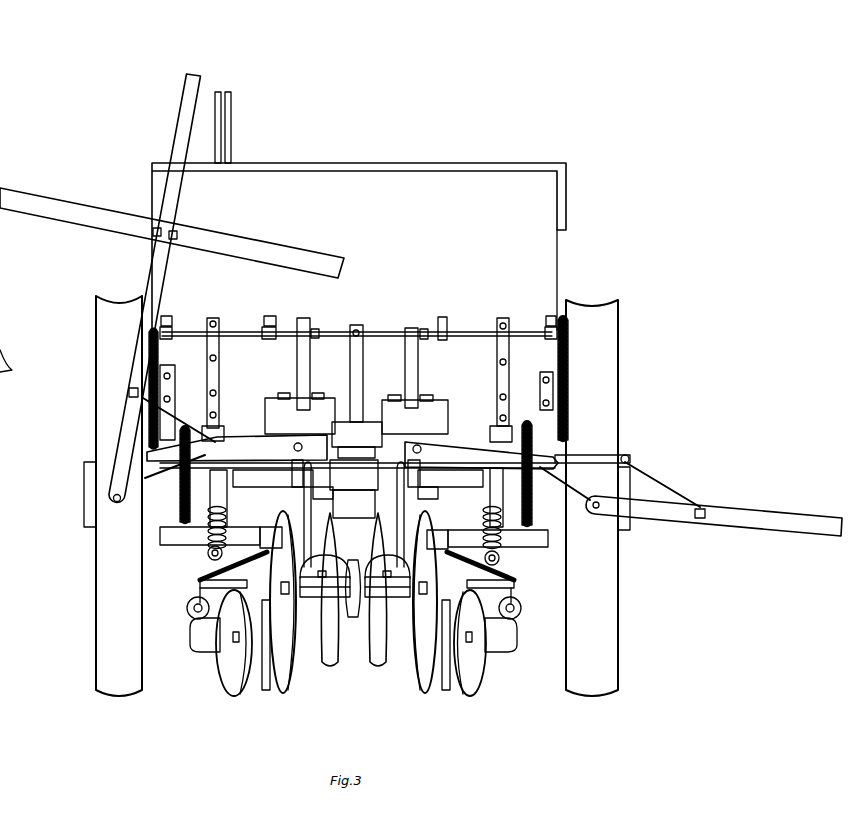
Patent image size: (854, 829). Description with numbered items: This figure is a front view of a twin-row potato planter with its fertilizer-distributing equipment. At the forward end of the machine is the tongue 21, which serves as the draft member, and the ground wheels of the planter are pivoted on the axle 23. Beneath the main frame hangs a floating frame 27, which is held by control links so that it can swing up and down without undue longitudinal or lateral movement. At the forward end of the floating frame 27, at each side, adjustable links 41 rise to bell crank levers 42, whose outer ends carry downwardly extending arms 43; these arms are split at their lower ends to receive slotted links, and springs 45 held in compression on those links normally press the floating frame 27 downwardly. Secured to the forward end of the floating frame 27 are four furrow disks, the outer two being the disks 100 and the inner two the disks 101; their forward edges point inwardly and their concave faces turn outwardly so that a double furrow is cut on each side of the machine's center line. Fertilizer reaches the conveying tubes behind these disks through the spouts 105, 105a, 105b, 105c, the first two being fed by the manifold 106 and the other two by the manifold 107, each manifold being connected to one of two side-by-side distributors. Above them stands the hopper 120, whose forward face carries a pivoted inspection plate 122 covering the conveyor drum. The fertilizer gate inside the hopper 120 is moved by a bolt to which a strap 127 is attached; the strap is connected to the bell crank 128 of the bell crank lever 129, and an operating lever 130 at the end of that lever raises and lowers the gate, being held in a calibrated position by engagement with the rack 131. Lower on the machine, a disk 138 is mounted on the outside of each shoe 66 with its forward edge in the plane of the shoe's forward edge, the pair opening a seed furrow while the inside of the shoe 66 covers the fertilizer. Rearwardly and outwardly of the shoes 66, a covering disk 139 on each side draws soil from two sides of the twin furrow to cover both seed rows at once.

The tongue 21 is at (360, 432).
The axle 23 is at (185, 533).
The floating frame 27 is at (200, 585).
The adjustable links 41 is at (210, 548).
The bell crank levers 42 is at (306, 494).
The downwardly extending arms 43 is at (226, 500).
The springs 45 is at (208, 541).
The shoe 66 is at (270, 672).
The outer disks 100 is at (332, 653).
The inner disks 101 is at (362, 647).
The spout 105 is at (268, 492).
The spout 105a is at (326, 512).
The spout 105b is at (440, 520).
The spout 105c is at (446, 504).
The manifold 106 is at (323, 508).
The manifold 107 is at (380, 512).
The hopper 120 is at (188, 215).
The inspection plate 122 is at (274, 408).
The strap 127 is at (300, 327).
The bell crank 128 is at (313, 330).
The bell crank lever 129 is at (246, 332).
The operating lever 130 is at (566, 296).
The rack 131 is at (557, 290).
The disk 138 is at (283, 690).
The covering disk 139 is at (236, 686).